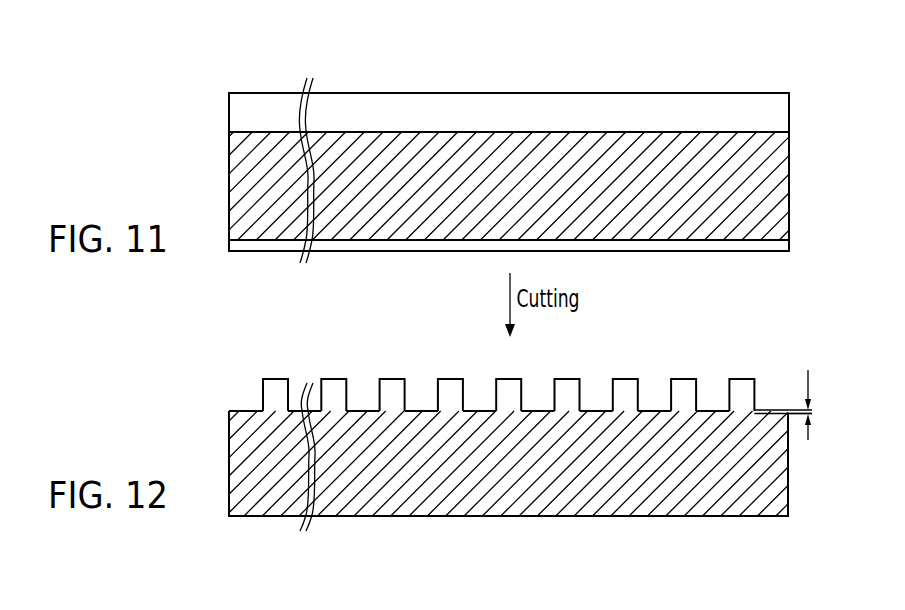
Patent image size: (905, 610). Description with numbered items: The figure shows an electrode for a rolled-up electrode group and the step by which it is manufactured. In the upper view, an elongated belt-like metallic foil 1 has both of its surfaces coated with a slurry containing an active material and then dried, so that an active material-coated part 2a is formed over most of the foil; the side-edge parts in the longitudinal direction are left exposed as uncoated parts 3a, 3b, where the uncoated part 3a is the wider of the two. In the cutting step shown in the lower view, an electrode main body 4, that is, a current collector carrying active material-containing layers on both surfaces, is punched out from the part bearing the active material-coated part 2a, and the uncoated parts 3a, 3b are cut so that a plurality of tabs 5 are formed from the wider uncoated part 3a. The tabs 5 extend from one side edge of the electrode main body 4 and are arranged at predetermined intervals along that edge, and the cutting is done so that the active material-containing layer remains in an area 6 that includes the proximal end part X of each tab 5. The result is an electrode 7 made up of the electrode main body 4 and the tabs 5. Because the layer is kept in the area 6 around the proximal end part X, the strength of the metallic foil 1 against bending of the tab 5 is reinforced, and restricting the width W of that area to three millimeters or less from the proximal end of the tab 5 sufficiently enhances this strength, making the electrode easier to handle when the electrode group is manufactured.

In FIG. 11, the metallic foil 1 is at (560, 93).
In FIG. 11, the active material-coated part 2a is at (700, 150).
In FIG. 12, the active material-coated part 2a is at (555, 512).
In FIG. 11, the uncoated part 3a is at (645, 106).
In FIG. 11, the uncoated part 3b is at (722, 244).
In FIG. 12, the electrode main body 4 is at (222, 412).
In FIG. 12, the tabs 5 is at (333, 388).
In FIG. 12, the area 6 is at (432, 410).
In FIG. 12, the electrode 7 is at (736, 530).
In FIG. 12, the width of the area W is at (812, 412).
In FIG. 12, the proximal end part of the tab X is at (798, 418).